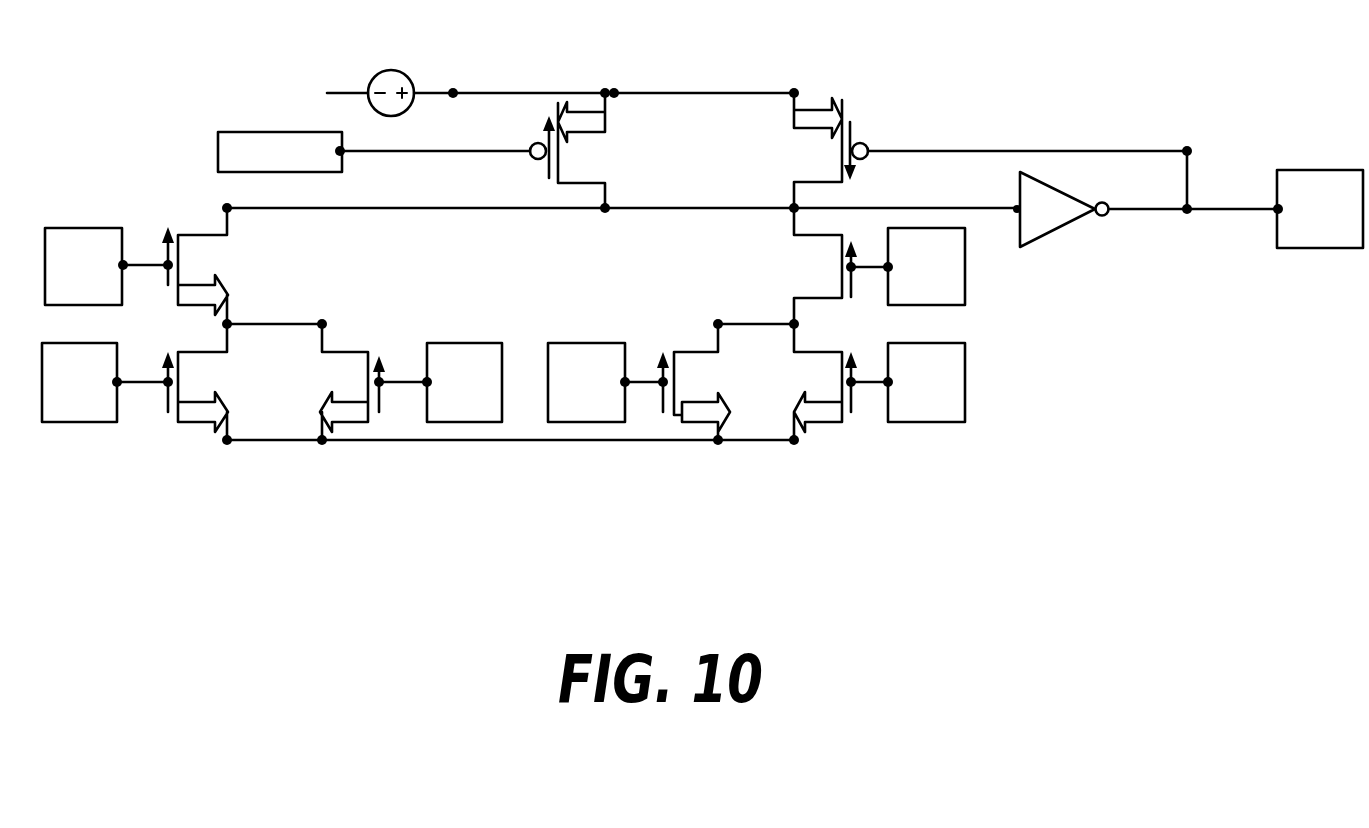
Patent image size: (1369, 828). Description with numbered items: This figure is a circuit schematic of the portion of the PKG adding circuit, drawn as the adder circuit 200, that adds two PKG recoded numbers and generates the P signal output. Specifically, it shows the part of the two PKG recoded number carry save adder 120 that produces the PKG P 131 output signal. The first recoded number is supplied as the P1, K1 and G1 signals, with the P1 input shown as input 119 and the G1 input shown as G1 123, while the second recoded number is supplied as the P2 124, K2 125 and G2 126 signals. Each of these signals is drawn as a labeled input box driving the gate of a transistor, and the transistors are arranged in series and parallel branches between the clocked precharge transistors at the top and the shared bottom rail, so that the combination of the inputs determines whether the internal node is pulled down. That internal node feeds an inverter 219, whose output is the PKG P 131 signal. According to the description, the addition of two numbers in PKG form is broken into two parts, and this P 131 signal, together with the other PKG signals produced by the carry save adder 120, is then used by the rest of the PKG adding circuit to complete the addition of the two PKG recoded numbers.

The dynamic logic circuit 200 is at (240, 90).
The P1 signal input 119 is at (105, 295).
The G2 126 is at (101, 410).
The K2 125 is at (486, 410).
The carry save adder 120 is at (608, 410).
The P2 124 is at (948, 296).
The G1 123 is at (948, 410).
The PKG P output signal 131 is at (1300, 237).
The inverter 219 is at (1072, 223).